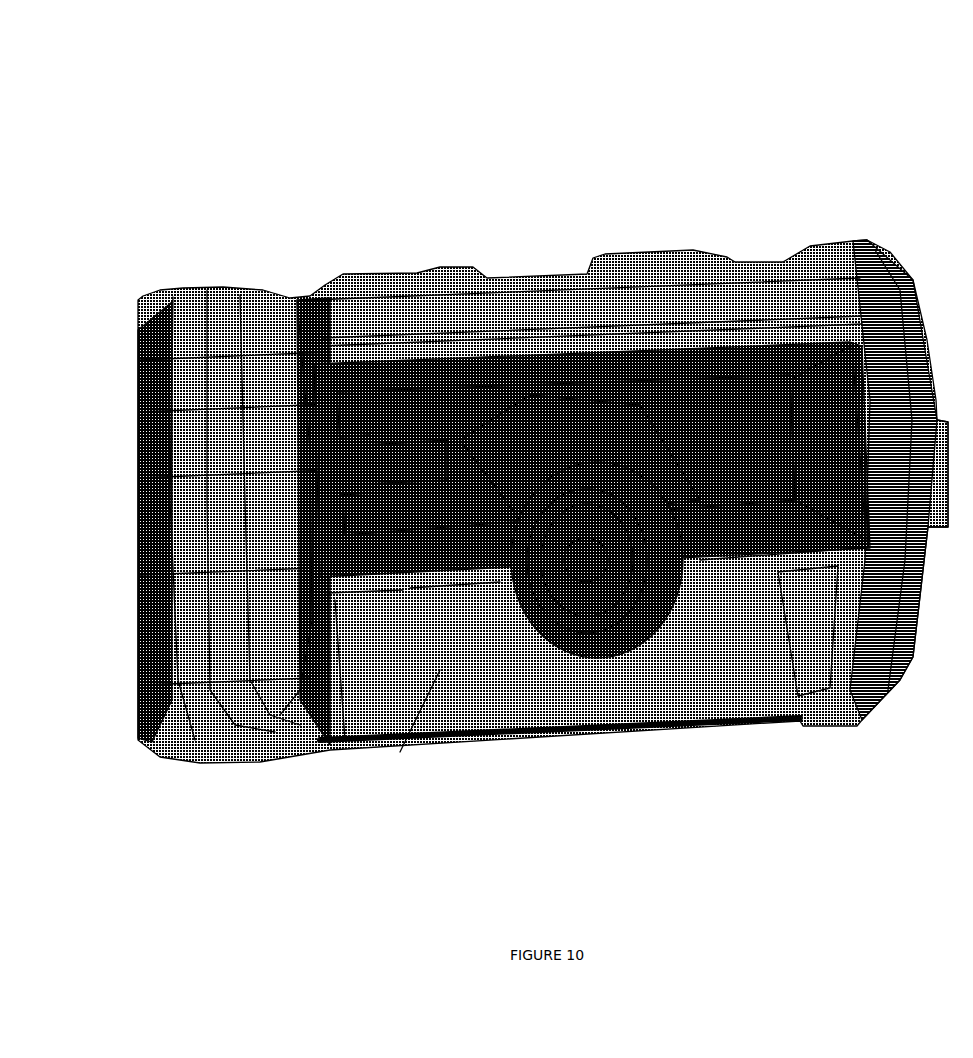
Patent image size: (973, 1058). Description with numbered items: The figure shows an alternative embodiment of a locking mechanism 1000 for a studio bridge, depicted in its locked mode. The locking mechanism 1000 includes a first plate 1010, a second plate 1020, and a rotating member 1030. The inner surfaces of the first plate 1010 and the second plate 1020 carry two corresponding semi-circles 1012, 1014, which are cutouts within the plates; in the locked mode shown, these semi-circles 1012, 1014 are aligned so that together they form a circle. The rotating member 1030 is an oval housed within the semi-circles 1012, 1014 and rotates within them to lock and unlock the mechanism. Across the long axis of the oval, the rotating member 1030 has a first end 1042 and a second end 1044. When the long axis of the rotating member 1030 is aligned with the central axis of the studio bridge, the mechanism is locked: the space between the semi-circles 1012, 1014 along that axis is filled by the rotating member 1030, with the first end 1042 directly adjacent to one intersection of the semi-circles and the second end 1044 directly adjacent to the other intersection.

The locking mechanism 1000 is at (136, 146).
The first plate 1010 is at (587, 423).
The semi-circle 1012 is at (650, 465).
The semi-circle 1014 is at (603, 640).
The second plate 1020 is at (400, 752).
The rotating member 1030 is at (500, 462).
The first end 1042 is at (513, 620).
The second end 1044 is at (677, 620).